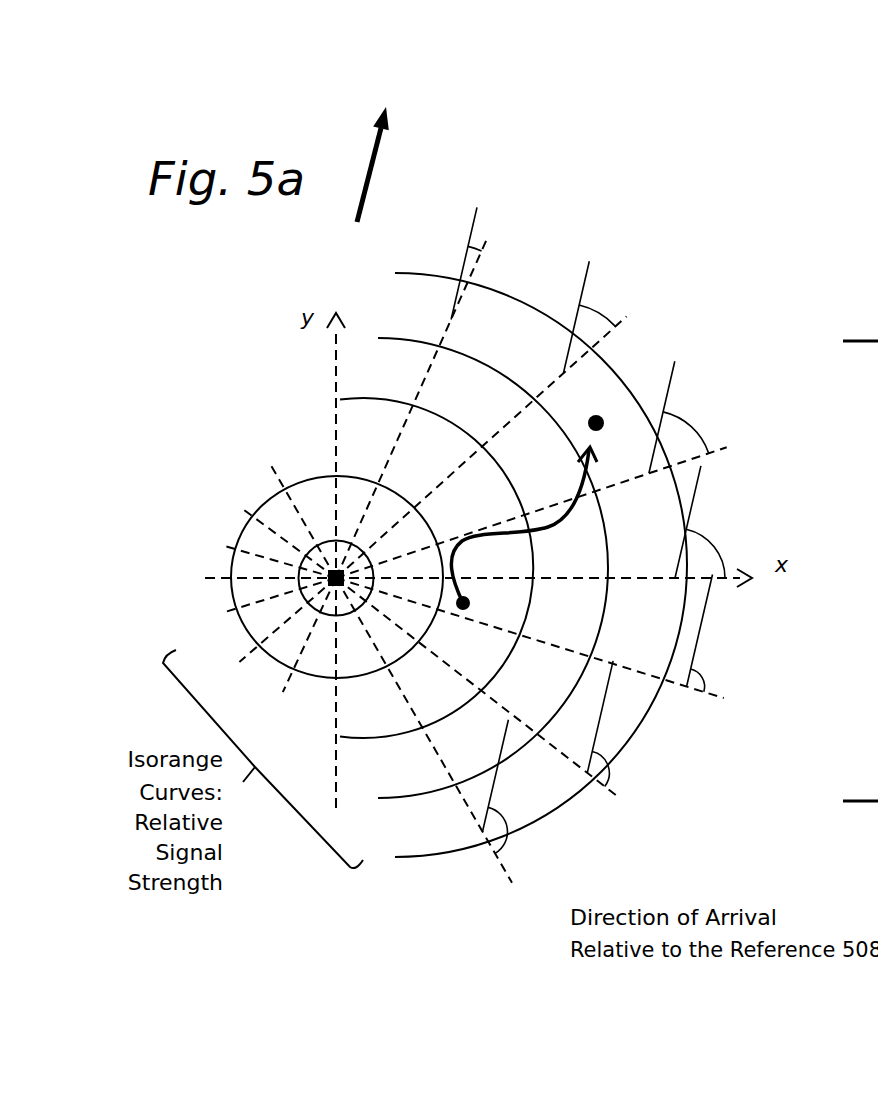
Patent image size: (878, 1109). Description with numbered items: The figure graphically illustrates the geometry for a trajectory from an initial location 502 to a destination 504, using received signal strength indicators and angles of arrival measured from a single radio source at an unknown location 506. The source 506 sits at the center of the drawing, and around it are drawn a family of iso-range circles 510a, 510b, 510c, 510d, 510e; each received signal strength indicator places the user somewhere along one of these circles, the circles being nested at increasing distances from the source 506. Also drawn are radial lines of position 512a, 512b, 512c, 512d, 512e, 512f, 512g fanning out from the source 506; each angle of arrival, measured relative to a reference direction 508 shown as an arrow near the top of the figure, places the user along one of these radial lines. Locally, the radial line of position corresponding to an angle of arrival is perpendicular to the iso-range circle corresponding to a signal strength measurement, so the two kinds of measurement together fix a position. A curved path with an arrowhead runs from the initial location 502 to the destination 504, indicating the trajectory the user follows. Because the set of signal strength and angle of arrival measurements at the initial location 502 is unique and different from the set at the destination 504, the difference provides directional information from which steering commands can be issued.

The initial location 502 is at (524, 530).
The destination 504 is at (601, 407).
The radio source at unknown location 506 is at (328, 572).
The reference direction 508 is at (366, 212).
The iso-range circle 510a is at (313, 610).
The iso-range circle 510b is at (360, 678).
The iso-range circle 510c is at (413, 727).
The iso-range circle 510d is at (438, 790).
The iso-range circle 510e is at (453, 850).
The radial line of position 512a is at (505, 877).
The radial line of position 512b is at (620, 797).
The radial line of position 512c is at (716, 697).
The radial line of position 512d is at (721, 585).
The radial line of position 512e is at (713, 452).
The radial line of position 512f is at (632, 315).
The radial line of position 512g is at (480, 252).